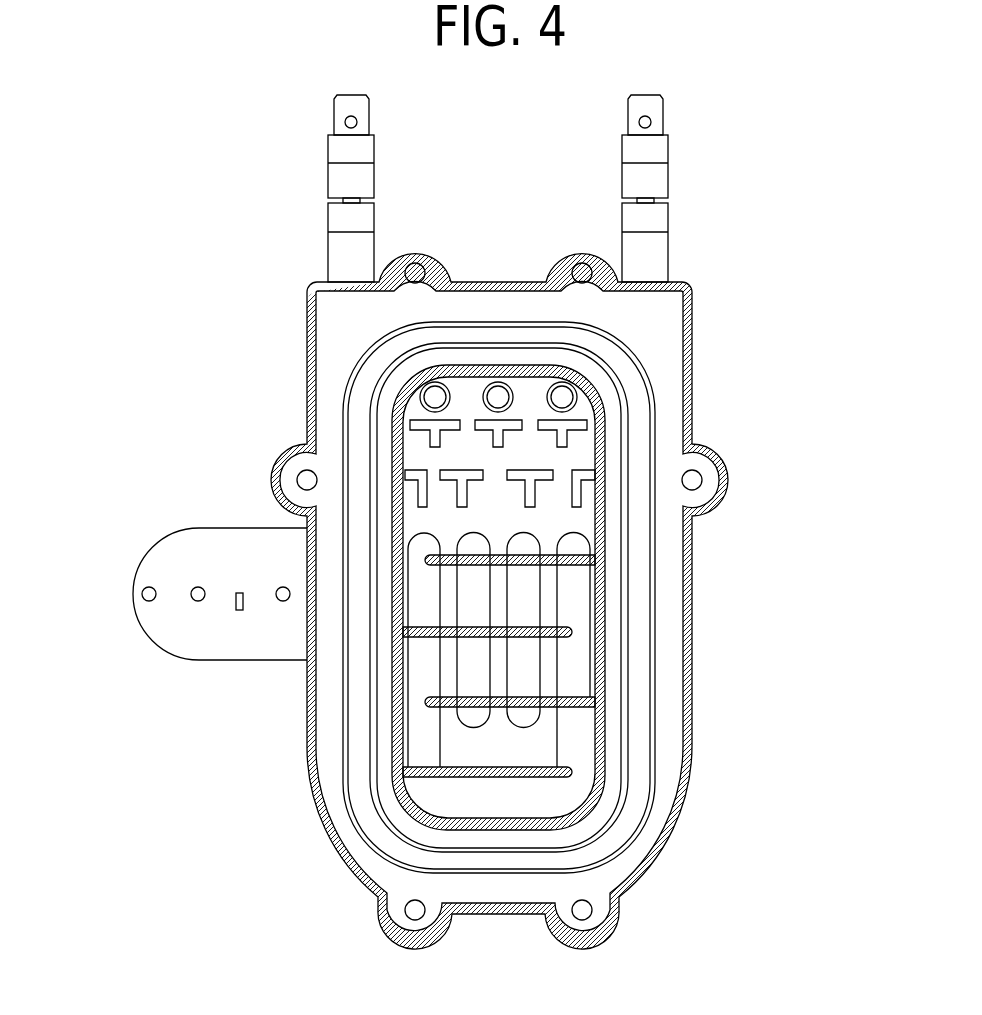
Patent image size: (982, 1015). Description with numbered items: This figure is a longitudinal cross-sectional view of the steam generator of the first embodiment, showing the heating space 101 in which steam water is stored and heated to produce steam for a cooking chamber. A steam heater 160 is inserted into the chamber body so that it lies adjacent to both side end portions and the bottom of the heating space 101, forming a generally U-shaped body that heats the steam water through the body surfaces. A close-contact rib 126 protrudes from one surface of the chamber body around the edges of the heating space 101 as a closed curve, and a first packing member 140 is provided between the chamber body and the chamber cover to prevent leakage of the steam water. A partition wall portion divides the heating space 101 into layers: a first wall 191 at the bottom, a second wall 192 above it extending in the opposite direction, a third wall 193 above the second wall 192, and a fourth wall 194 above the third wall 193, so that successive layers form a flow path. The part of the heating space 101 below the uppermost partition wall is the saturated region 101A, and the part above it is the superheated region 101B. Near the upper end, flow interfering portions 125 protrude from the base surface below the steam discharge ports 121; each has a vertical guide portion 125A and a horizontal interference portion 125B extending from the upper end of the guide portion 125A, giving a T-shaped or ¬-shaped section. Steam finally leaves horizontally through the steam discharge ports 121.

The heating space 101 is at (379, 602).
The saturated region 101A is at (467, 760).
The superheated region 101B is at (499, 484).
The steam discharge ports 121 is at (428, 397).
The flow interfering portions 125 is at (622, 414).
The guide portion 125A is at (587, 438).
The interference portion 125B is at (587, 423).
The close-contact rib 126 is at (600, 771).
The first packing member 140 is at (628, 812).
The steam heater 160 is at (338, 243).
The first wall 191 is at (570, 773).
The second wall 192 is at (570, 703).
The third wall 193 is at (565, 631).
The fourth wall 194 is at (570, 559).